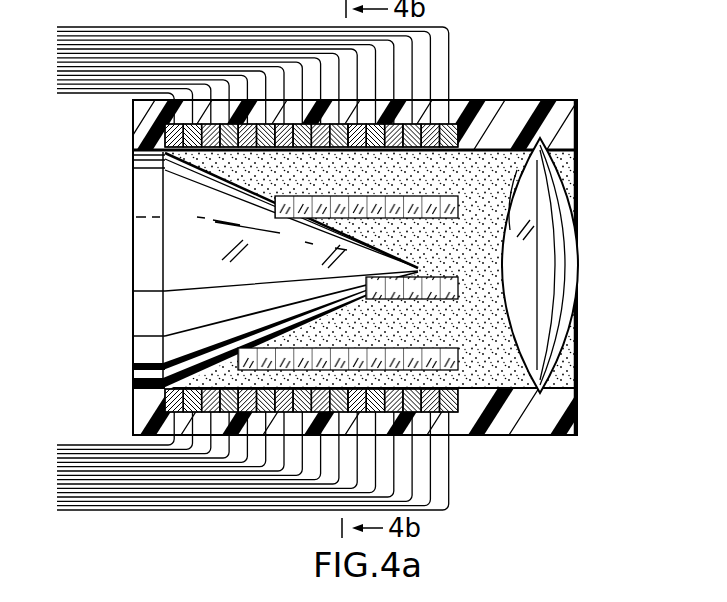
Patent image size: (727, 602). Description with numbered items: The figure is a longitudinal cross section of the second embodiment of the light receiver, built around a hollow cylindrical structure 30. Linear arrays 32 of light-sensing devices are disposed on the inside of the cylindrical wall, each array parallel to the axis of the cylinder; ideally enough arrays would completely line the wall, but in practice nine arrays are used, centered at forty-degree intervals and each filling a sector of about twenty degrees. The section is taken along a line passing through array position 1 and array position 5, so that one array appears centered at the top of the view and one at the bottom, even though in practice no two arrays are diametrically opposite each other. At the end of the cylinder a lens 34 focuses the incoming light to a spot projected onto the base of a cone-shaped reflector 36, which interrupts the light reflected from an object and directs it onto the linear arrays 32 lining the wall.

The array position 1 is at (140, 135).
The array position 5 is at (163, 390).
The hollow cylindrical structure 30 is at (490, 100).
The linear arrays of light-sensing devices 32 is at (373, 157).
The lens 34 is at (565, 258).
The cone-shaped reflector 36 is at (187, 256).